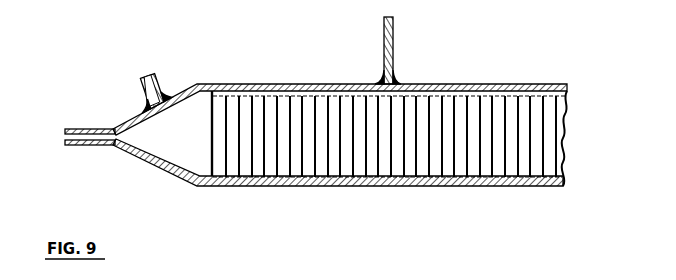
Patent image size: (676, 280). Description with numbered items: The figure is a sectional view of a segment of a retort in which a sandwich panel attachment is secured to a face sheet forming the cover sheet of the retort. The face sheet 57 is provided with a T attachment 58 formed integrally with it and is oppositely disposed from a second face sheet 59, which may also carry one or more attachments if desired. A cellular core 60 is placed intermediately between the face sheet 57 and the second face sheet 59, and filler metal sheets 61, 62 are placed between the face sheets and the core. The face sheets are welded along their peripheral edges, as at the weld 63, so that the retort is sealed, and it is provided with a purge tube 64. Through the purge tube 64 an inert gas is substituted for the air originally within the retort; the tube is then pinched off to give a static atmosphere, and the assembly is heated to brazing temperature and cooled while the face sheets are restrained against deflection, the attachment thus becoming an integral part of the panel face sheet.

The face sheet 57 is at (317, 118).
The T attachment 58 is at (395, 46).
The second face sheet 59 is at (368, 184).
The cellular core 60 is at (541, 143).
The filler metal sheet 61 is at (568, 93).
The filler metal sheet 62 is at (552, 178).
The weld 63 is at (63, 134).
The purge tube 64 is at (163, 82).